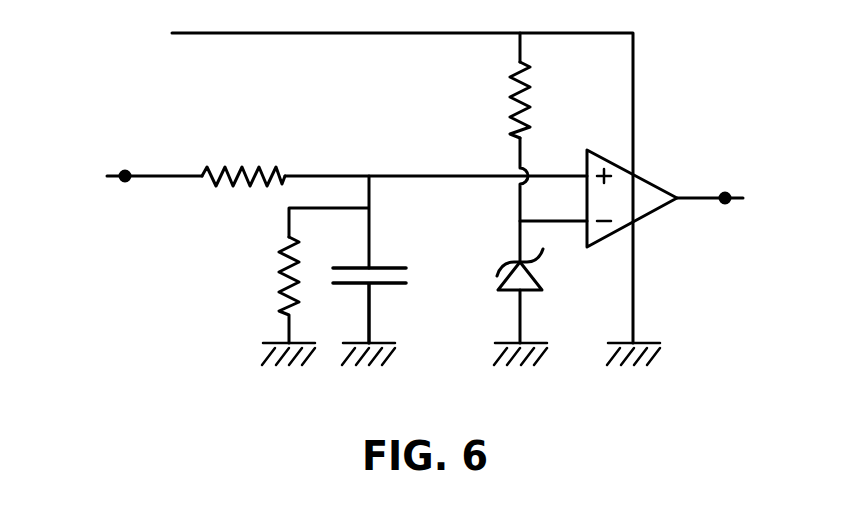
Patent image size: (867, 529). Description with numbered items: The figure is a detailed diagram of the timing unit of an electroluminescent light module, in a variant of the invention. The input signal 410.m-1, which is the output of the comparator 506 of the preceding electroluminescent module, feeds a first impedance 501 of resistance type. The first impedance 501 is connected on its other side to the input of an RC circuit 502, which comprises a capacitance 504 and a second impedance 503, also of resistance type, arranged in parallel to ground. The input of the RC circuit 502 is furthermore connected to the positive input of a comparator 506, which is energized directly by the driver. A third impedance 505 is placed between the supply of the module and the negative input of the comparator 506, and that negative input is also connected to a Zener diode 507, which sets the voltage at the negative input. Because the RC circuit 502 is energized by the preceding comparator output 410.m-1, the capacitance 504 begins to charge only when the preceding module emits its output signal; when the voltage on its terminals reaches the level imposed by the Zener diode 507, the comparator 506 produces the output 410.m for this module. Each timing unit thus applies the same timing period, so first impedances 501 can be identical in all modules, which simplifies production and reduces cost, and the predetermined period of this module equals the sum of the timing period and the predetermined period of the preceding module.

The output of the comparator of the preceding electroluminescent module 410.m-1 is at (125, 176).
The first impedance 501 is at (263, 170).
The RC circuit 502 is at (226, 287).
The second impedance 503 is at (283, 283).
The capacitance 504 is at (395, 285).
The third impedance 505 is at (530, 88).
The comparator 506 is at (653, 183).
The Zener diode 507 is at (538, 290).
The output of the comparator 410.m is at (725, 198).